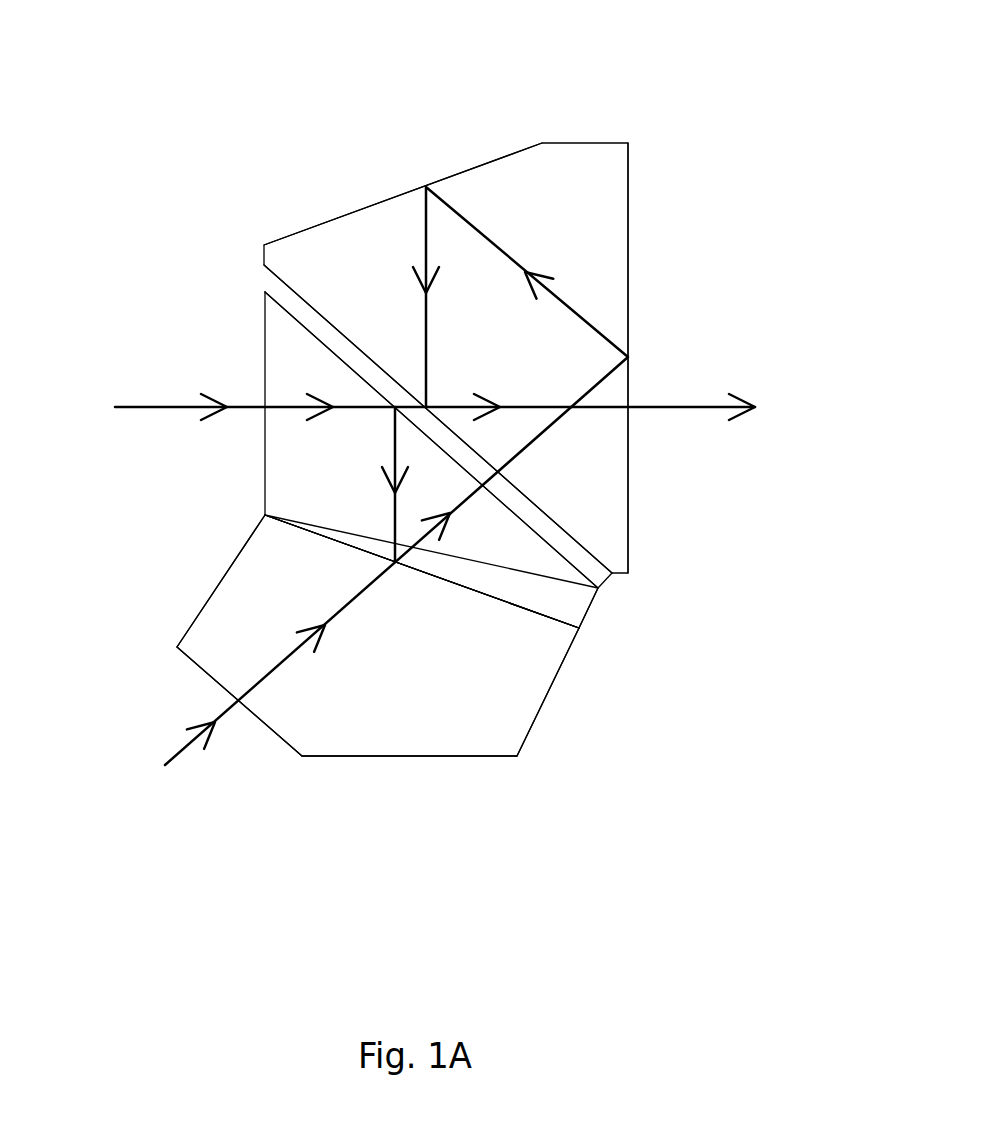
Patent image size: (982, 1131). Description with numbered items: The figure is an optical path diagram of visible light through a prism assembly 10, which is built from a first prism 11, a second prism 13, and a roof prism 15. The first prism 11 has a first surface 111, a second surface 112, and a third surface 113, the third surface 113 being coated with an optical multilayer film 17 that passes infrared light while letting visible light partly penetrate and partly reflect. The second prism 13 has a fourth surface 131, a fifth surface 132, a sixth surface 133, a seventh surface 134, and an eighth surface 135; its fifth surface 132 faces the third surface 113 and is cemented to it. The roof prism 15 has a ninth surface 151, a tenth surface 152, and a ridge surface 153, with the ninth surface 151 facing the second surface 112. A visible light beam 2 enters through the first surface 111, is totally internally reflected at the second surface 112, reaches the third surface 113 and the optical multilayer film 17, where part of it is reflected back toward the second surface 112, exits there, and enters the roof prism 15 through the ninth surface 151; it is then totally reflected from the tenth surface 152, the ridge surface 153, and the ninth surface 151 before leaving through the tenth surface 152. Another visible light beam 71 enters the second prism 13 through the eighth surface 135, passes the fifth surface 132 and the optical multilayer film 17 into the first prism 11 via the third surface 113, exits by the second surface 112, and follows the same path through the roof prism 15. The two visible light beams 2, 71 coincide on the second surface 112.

The prism assembly 10 is at (37, 45).
The first prism 11 is at (298, 367).
The first surface 111 is at (263, 323).
The second surface 112 is at (573, 567).
The third surface 113 is at (527, 613).
The second prism 13 is at (478, 710).
The fourth surface 131 is at (205, 602).
The fifth surface 132 is at (322, 540).
The sixth surface 133 is at (550, 690).
The seventh surface 134 is at (408, 758).
The eighth surface 135 is at (198, 668).
The roof prism 15 is at (335, 240).
The ninth surface 151 is at (562, 524).
The tenth surface 152 is at (628, 197).
The ridge surface 153 is at (480, 165).
The optical multilayer film 17 is at (470, 593).
The visible light beam 2 is at (160, 407).
The visible light beam 71 is at (187, 740).